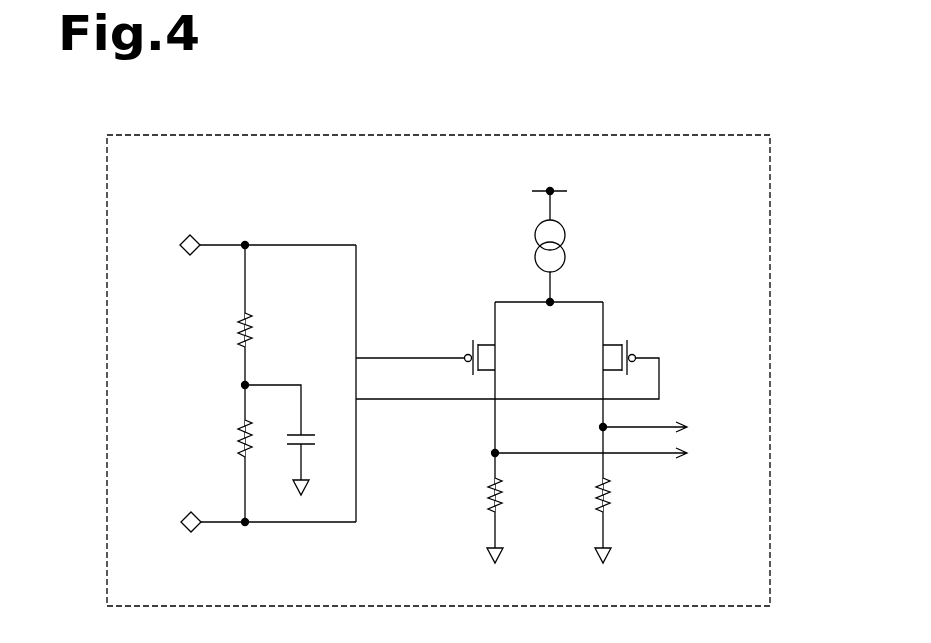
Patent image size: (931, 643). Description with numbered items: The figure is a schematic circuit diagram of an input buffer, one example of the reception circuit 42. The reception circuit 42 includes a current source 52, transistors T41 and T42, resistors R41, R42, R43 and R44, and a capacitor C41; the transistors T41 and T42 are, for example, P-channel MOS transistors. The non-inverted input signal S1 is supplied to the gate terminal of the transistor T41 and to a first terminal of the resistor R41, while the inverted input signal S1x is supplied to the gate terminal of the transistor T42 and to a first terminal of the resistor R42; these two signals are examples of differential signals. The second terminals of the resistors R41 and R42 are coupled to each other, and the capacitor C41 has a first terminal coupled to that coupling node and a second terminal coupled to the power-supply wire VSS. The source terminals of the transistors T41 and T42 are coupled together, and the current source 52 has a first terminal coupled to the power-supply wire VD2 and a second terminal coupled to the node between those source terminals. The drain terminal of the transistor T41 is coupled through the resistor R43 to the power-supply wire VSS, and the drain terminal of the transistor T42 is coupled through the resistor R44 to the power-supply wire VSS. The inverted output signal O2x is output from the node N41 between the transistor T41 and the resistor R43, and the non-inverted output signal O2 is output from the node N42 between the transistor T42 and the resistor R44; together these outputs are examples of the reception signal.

The reception circuit 42 is at (770, 171).
The current source 52 is at (565, 235).
The resistor R41 is at (238, 337).
The resistor R42 is at (238, 447).
The capacitor C41 is at (305, 432).
The transistor T41 is at (464, 343).
The transistor T42 is at (636, 343).
The resistor R43 is at (489, 483).
The resistor R44 is at (608, 483).
The node N41 is at (498, 456).
The node N42 is at (600, 427).
The non-inverted input signal S1 is at (248, 246).
The inverted input signal S1x is at (243, 523).
The power-supply wire VD2 is at (552, 189).
The power-supply wire VSS is at (552, 572).
The non-inverted output signal O2 is at (710, 428).
The inverted output signal O2x is at (718, 456).